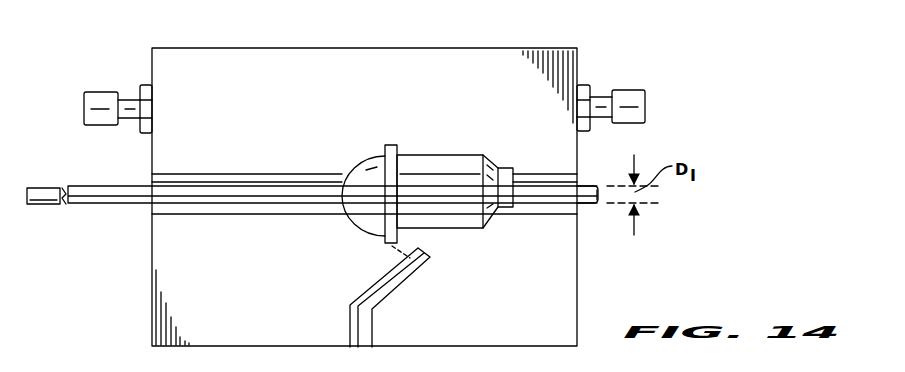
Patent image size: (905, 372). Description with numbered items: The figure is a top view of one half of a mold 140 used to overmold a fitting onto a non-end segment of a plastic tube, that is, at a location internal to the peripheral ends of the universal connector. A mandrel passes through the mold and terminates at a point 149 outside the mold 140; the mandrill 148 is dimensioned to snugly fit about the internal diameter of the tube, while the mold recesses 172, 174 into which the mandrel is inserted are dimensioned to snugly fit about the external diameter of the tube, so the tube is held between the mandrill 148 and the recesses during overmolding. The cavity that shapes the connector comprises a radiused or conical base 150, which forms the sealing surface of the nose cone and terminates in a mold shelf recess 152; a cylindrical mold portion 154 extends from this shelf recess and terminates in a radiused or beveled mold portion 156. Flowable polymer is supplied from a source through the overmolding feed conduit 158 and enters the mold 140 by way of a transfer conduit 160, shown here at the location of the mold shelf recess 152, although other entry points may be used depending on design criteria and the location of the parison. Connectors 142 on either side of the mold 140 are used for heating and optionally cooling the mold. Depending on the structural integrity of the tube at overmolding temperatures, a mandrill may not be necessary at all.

The mold 140 is at (470, 45).
The connectors 142 is at (100, 92).
The mandrill 148 is at (522, 188).
The point 149 is at (602, 202).
The radiused or conical base 150 is at (363, 158).
The mold shelf recess 152 is at (393, 145).
The cylindrical mold portion 154 is at (470, 229).
The radiused or beveled mold portion 156 is at (494, 220).
The overmolding feed conduit 158 is at (393, 288).
The transfer conduit 160 is at (395, 250).
The mold recess 172 is at (250, 215).
The mold recess 174 is at (510, 170).